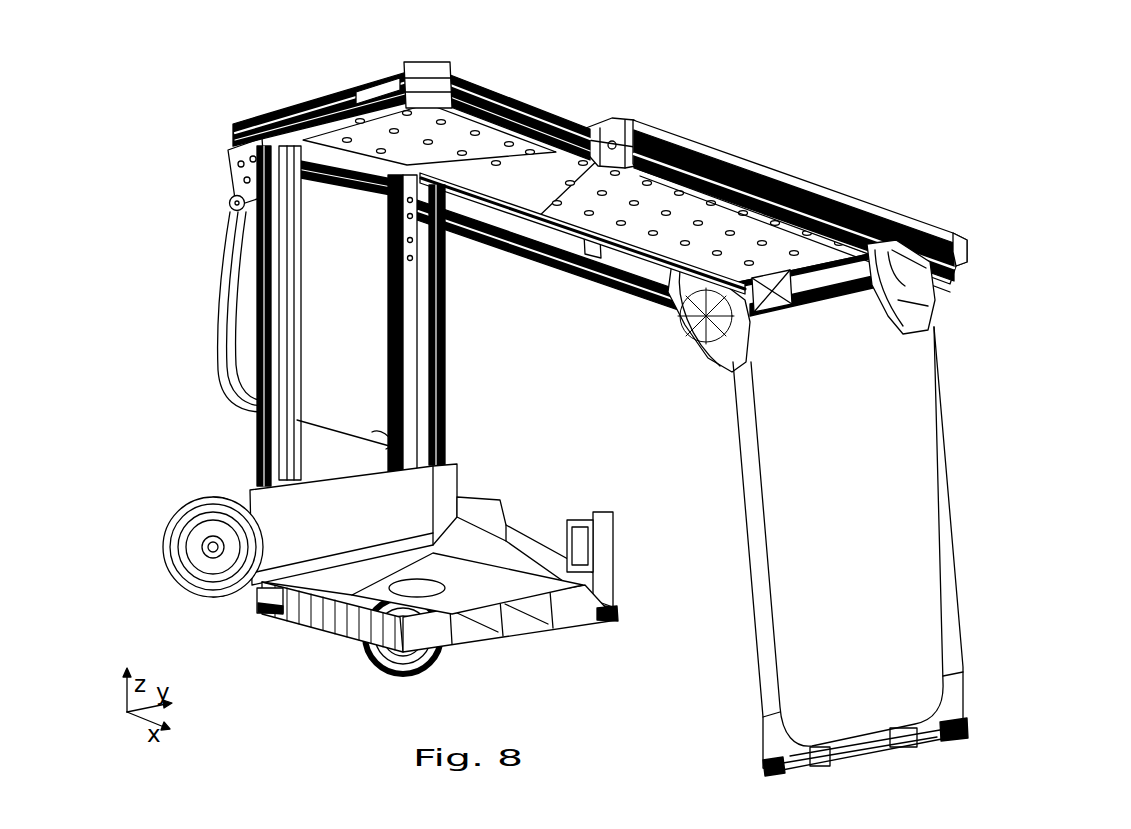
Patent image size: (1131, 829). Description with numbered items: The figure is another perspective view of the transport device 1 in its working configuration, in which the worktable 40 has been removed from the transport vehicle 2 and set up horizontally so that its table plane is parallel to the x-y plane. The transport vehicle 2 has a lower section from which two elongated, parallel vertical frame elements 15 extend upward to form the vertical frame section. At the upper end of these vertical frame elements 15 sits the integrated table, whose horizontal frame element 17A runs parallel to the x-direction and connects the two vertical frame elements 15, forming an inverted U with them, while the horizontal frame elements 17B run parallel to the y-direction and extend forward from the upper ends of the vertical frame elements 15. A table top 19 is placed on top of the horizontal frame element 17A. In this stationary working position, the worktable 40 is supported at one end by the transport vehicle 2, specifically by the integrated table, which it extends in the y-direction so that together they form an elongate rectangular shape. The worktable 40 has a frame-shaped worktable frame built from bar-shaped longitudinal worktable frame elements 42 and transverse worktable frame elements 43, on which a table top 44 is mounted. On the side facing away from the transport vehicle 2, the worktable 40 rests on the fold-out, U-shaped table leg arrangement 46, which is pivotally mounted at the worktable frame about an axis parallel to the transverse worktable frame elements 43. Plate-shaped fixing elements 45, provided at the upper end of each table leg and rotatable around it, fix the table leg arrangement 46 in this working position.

The transport device 1 is at (1046, 165).
The transport vehicle 2 is at (186, 219).
The vertical frame elements 15 is at (284, 320).
The horizontal frame element 17A is at (513, 110).
The horizontal frame elements 17B is at (322, 95).
The table top 19 is at (377, 86).
The worktable 40 is at (891, 166).
The longitudinal worktable frame elements 42 is at (752, 165).
The transverse worktable frame elements 43 is at (600, 126).
The table top 44 is at (692, 140).
The fixing elements 45 is at (702, 348).
The table leg arrangement 46 is at (948, 512).